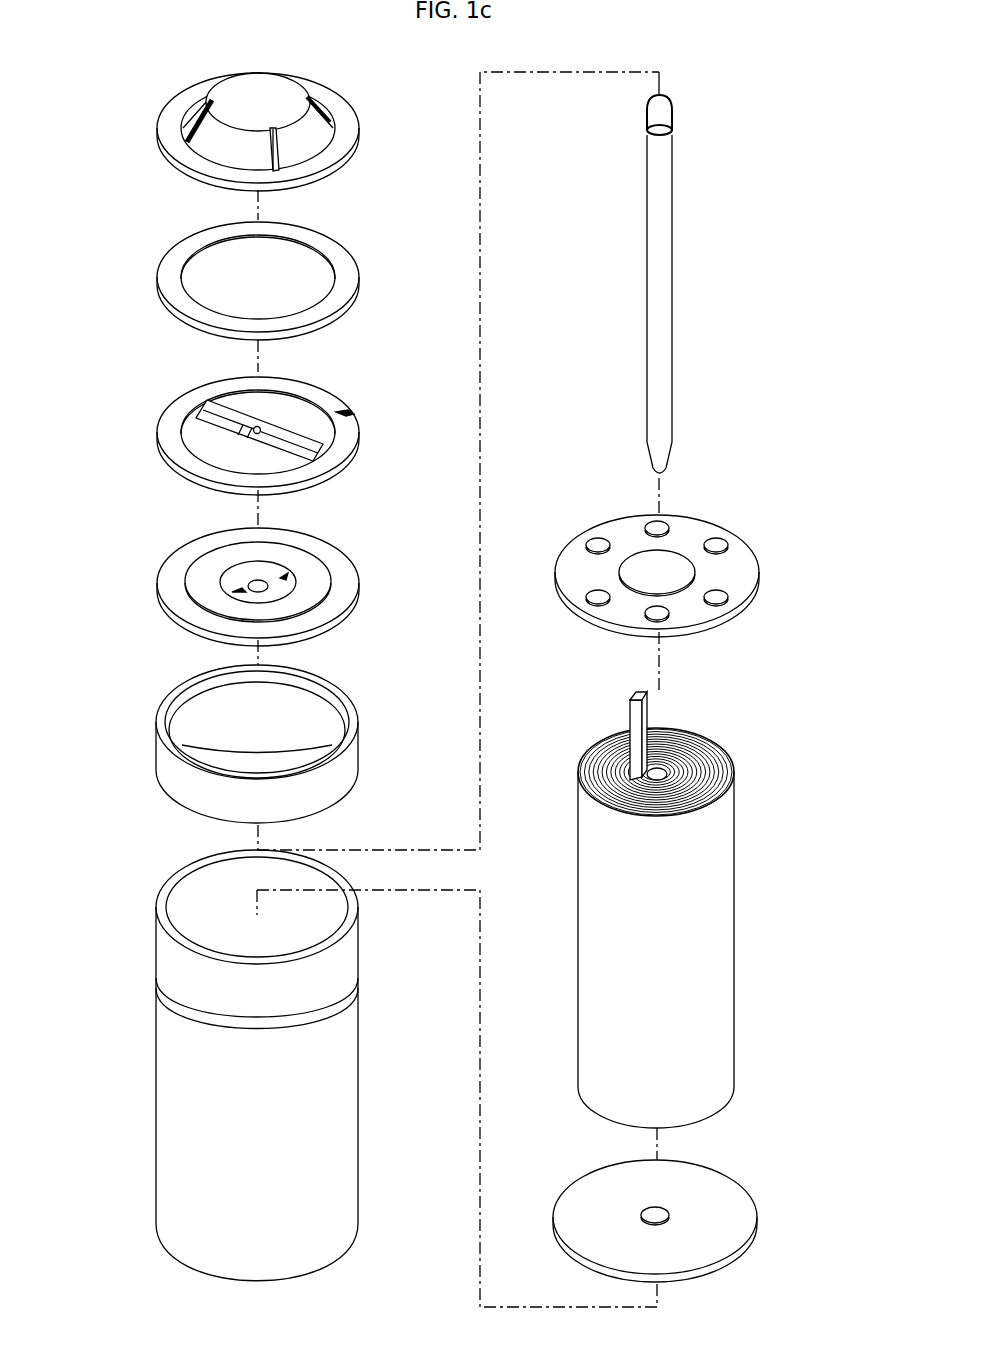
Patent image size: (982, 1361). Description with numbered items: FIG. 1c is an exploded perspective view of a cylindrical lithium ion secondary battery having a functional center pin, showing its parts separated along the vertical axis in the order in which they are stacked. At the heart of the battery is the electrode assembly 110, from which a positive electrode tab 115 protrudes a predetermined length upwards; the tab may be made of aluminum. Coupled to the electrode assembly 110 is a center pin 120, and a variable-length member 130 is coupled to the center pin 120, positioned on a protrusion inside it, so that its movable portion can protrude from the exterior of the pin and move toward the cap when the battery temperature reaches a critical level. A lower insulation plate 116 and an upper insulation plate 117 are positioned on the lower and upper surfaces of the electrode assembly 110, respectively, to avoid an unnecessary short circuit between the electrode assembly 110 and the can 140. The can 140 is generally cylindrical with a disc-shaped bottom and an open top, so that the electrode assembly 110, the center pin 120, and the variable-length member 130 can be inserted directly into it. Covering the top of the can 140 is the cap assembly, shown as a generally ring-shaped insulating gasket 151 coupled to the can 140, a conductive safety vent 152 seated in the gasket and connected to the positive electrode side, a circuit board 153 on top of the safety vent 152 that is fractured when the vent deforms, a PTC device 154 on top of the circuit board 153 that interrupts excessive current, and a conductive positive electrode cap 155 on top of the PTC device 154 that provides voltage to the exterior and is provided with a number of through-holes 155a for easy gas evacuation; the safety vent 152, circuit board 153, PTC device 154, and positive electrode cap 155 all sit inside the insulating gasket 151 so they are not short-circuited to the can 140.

The electrode assembly 110 is at (714, 933).
The positive electrode tab 115 is at (640, 697).
The lower insulation plate 116 is at (735, 1221).
The upper insulation plate 117 is at (738, 567).
The center pin 120 is at (662, 290).
The variable-length member 130 is at (662, 112).
The can 140 is at (168, 1068).
The insulating gasket 151 is at (168, 762).
The safety vent 152 is at (163, 584).
The circuit board 153 is at (163, 430).
The PTC device 154 is at (163, 273).
The positive electrode cap 155 is at (163, 124).
The through-holes 155a is at (285, 143).